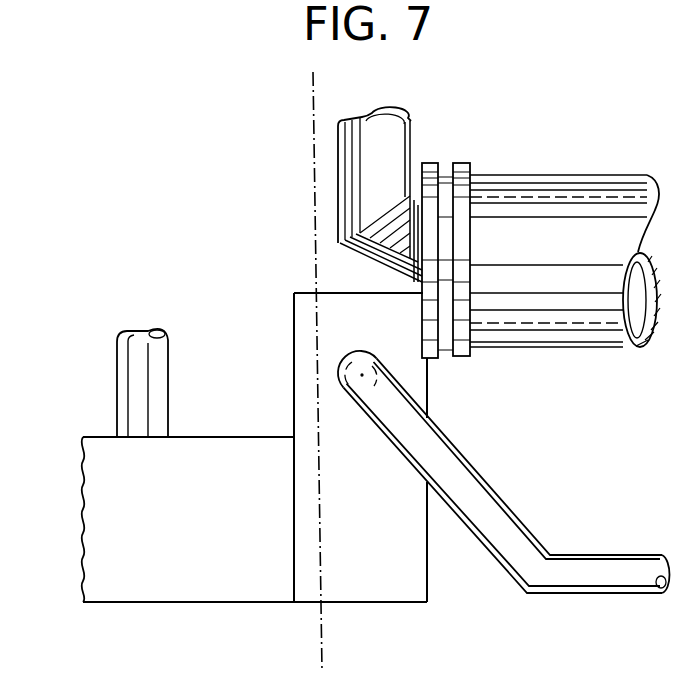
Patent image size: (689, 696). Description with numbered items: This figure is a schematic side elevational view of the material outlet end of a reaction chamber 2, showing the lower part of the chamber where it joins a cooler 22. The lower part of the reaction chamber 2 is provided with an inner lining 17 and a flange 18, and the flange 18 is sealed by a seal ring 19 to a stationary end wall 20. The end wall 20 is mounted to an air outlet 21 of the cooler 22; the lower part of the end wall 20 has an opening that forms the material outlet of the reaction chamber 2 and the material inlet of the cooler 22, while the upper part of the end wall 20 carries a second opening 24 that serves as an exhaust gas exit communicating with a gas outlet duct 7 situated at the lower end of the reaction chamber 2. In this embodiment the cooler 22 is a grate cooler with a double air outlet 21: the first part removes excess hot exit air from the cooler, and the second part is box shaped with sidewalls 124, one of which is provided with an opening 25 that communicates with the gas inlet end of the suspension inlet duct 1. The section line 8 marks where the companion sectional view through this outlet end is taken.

The suspension inlet duct 1 is at (487, 512).
The reaction chamber 2 is at (627, 232).
The gas outlet duct 7 is at (348, 158).
The section line 8— 8 is at (345, 89).
The inner lining 17 is at (553, 196).
The flange 18 is at (460, 162).
The seal ring 19 is at (445, 332).
The stationary end wall 20 is at (428, 162).
The air outlet 21 is at (300, 377).
The cooler 22 is at (190, 535).
The second opening 24 is at (656, 300).
The opening 25 is at (358, 351).
The sidewalls 124 is at (413, 567).